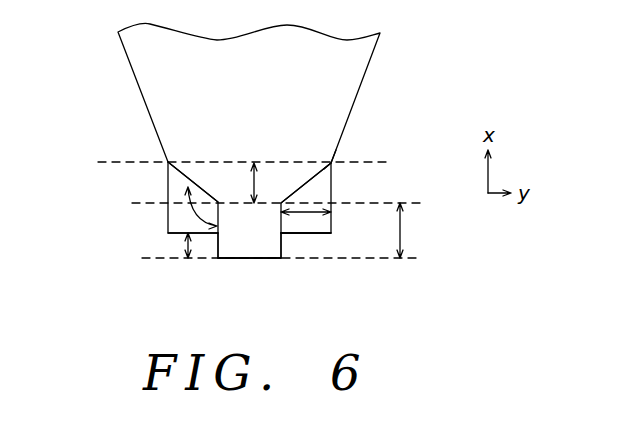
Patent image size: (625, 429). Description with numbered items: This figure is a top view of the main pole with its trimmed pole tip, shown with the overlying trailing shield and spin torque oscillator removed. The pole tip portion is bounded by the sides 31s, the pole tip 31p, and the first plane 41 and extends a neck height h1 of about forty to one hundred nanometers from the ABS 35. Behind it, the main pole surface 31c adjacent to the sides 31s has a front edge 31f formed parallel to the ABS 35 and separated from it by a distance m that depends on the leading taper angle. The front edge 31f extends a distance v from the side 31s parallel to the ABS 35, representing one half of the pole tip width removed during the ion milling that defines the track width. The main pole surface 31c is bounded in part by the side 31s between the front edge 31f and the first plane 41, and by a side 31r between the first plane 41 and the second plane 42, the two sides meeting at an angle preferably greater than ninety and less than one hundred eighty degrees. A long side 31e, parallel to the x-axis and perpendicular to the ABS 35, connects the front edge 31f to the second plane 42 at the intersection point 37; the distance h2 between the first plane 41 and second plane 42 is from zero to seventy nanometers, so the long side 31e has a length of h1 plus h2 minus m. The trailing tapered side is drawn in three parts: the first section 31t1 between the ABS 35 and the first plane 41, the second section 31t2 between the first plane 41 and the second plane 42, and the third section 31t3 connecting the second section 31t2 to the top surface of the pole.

The third section of trailing tapered side 31t3 is at (345, 68).
The second section of trailing tapered side 31t2 is at (280, 178).
The intersection point 37 is at (331, 164).
The long side 31e is at (331, 188).
The side 31r is at (180, 168).
The main pole surface 31c is at (167, 224).
The front edge 31f is at (317, 235).
The side 31s is at (217, 250).
The pole tip 31p is at (252, 259).
The first section of trailing tapered side 31t1 is at (228, 250).
The second plane 42 is at (244, 165).
The first plane 41 is at (279, 205).
The ABS 35 is at (277, 261).
The distance between first plane and second plane h2 is at (240, 183).
The neck height h1 is at (416, 230).
The distance m is at (178, 245).
The distance v is at (306, 209).